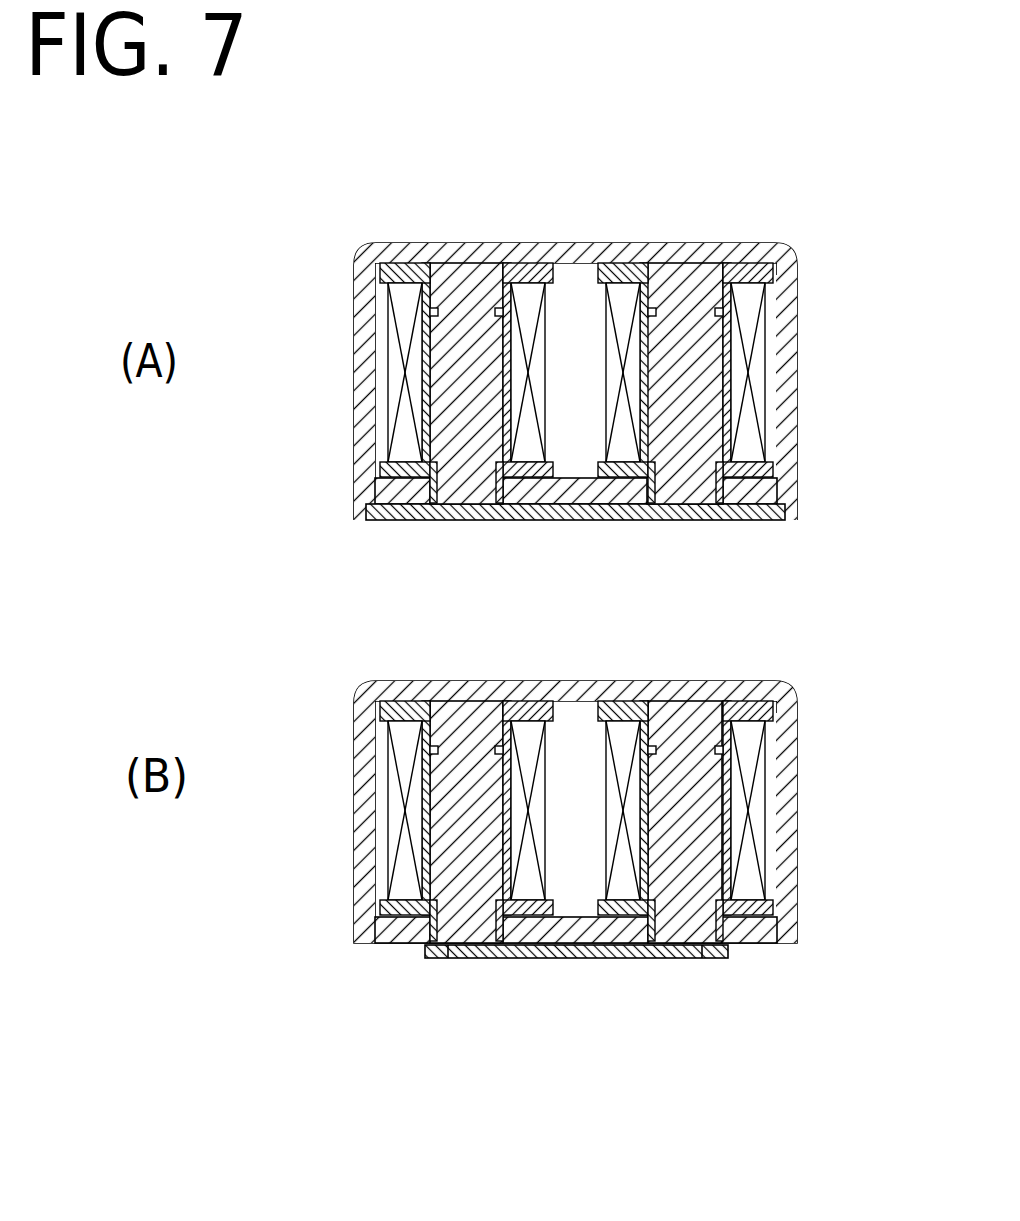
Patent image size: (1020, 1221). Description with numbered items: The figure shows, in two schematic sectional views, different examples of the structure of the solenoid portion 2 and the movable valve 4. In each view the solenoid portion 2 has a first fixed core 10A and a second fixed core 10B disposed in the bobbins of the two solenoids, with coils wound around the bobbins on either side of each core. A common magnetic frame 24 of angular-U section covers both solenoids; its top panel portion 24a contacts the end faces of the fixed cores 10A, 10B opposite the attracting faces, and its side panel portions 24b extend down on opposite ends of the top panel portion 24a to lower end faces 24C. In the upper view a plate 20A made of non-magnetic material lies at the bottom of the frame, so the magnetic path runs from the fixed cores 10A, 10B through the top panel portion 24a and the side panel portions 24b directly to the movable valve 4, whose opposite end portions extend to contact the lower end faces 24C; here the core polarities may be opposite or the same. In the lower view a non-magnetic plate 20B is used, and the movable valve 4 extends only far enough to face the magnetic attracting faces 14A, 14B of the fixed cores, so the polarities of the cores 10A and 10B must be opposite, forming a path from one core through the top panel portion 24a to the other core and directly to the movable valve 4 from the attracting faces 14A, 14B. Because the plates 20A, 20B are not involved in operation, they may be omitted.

The solenoid portion 2 is at (585, 625).
The magnetic frame 24 is at (574, 544).
The top panel portion 24a is at (588, 250).
The side panel portions 24b is at (360, 385).
The lower end faces 24C is at (362, 520).
The first fixed core 10A is at (456, 340).
The second fixed core 10B is at (695, 333).
The plate 20A is at (765, 490).
The plate 20B is at (757, 925).
The movable valve 4 is at (575, 804).
The magnetic attracting face 14A is at (450, 960).
The magnetic attracting face 14B is at (700, 960).